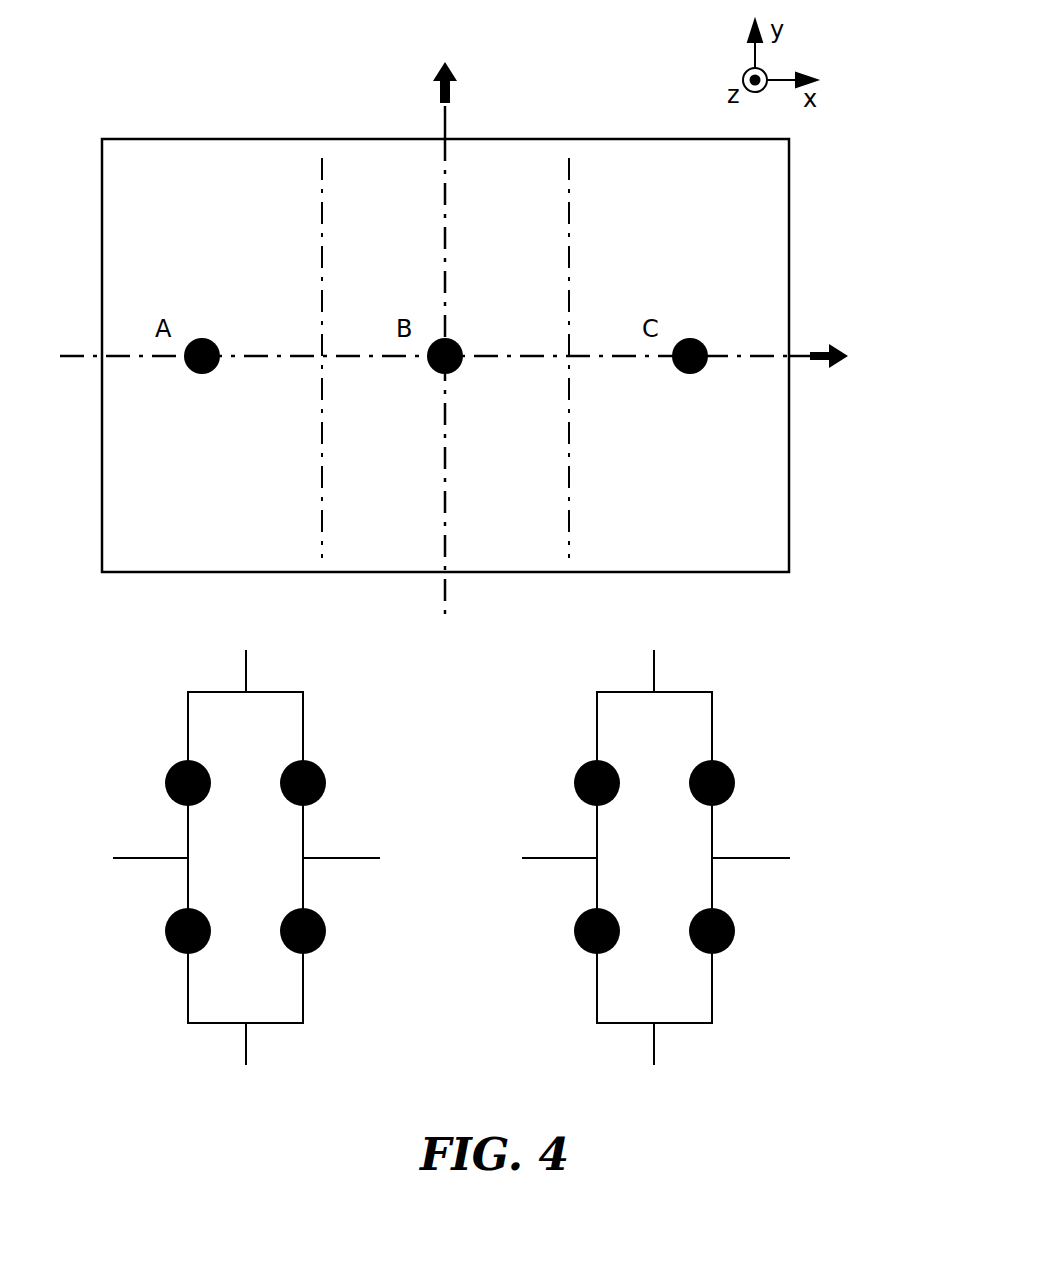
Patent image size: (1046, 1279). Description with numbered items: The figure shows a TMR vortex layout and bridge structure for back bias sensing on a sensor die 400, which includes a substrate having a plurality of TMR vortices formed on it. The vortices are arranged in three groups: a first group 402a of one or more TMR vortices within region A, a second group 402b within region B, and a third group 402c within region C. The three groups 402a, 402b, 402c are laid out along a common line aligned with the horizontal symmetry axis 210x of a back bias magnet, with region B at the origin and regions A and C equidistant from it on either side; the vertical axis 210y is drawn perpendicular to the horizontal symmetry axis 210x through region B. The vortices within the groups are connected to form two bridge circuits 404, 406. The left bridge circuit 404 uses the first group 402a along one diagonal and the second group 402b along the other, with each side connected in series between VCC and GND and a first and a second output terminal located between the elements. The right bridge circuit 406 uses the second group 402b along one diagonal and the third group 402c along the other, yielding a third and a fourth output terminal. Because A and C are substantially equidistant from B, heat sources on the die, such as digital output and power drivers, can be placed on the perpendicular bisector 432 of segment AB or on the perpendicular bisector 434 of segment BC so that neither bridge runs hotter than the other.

The sensor die 400 is at (160, 175).
The first group of TMR vortices 402a is at (202, 374).
The second group of TMR vortices 402b is at (443, 374).
The third group of TMR vortices 402c is at (690, 374).
The bridge circuit 404 is at (152, 670).
The bridge circuit 406 is at (741, 670).
The perpendicular bisector 432 is at (321, 240).
The perpendicular bisector 434 is at (570, 240).
The horizontal symmetry axis 210x is at (465, 339).
The y-axis direction 210y is at (448, 326).